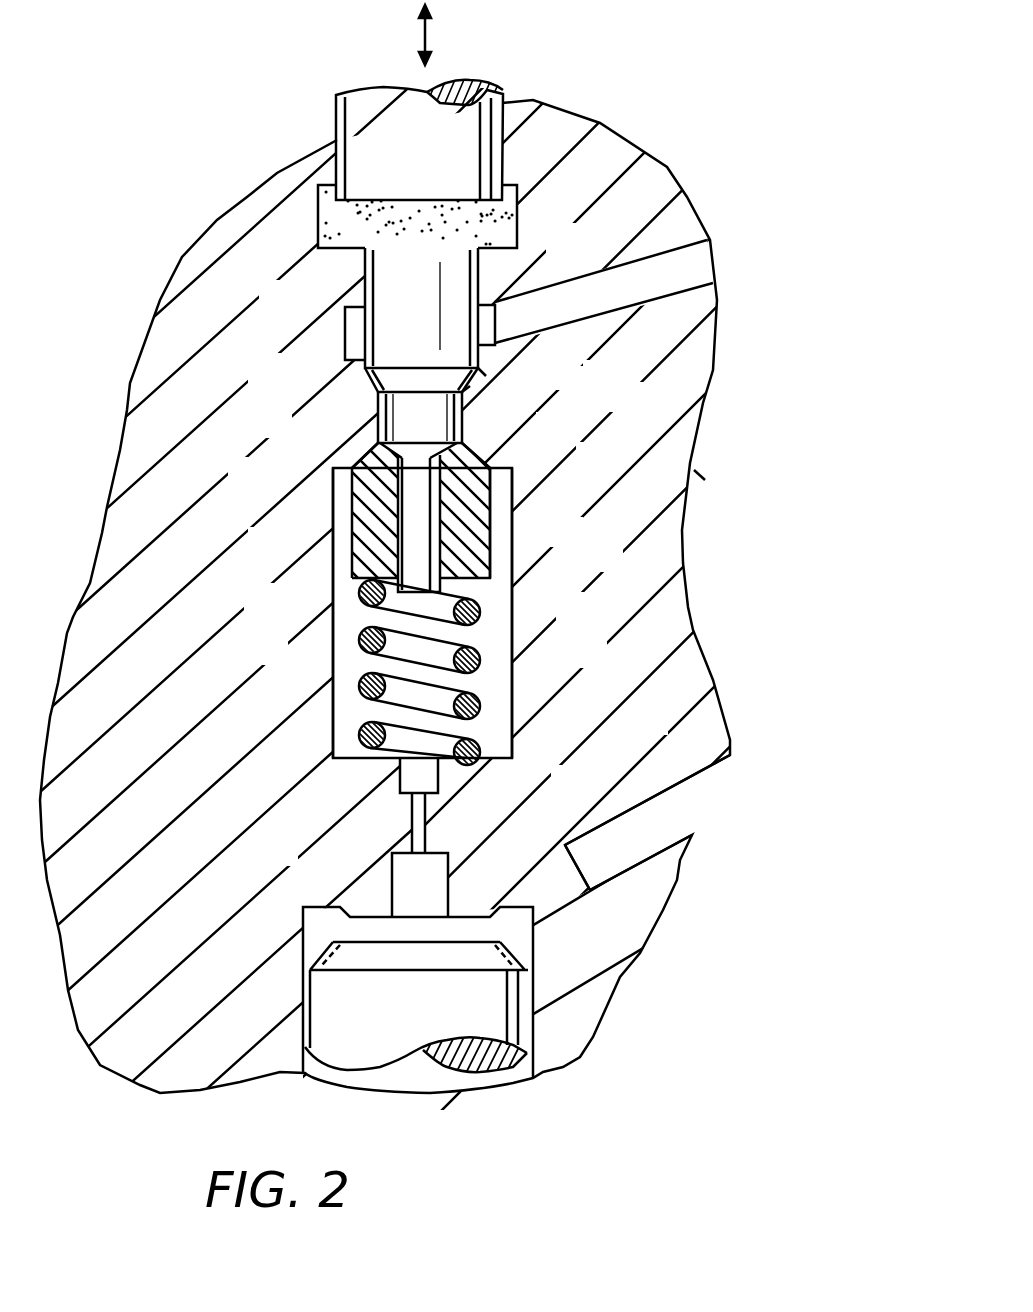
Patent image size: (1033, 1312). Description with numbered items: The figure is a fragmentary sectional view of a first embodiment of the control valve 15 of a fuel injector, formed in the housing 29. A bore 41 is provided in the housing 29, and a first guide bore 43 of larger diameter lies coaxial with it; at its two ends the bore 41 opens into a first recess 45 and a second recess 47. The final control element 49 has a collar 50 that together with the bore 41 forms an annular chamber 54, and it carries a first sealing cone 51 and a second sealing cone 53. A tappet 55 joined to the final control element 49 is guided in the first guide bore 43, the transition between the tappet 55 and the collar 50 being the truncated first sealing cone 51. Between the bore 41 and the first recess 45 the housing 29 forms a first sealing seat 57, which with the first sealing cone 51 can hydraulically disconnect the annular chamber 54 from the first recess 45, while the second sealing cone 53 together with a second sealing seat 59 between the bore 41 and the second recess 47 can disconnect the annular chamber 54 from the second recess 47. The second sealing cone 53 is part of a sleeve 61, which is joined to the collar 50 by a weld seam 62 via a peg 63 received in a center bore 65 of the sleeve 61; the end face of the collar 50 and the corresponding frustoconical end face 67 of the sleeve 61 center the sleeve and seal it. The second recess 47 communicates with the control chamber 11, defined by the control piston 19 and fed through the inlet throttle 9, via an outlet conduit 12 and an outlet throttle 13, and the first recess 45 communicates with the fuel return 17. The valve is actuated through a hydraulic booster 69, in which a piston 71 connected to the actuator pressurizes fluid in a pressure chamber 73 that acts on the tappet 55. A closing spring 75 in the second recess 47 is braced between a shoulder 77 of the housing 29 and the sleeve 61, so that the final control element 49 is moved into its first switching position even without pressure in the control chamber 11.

The inlet throttle 9 is at (563, 897).
The control chamber 11 is at (530, 932).
The outlet conduit 12 is at (397, 882).
The outlet throttle 13 is at (425, 822).
The control valve 15 is at (795, 409).
The fuel return 17 is at (690, 265).
The control piston 19 is at (530, 1013).
The housing 29 is at (646, 527).
The bore 41 is at (437, 355).
The first guide bore 43 is at (343, 288).
The first recess 45 is at (493, 363).
The second recess 47 is at (516, 656).
The final control element 49 is at (402, 426).
The collar 50 is at (465, 428).
The first sealing cone 51 is at (478, 388).
The second sealing cone 53 is at (487, 452).
The annular chamber 54 is at (457, 402).
The tappet 55 is at (447, 292).
The first sealing seat 57 is at (370, 375).
The second sealing seat 59 is at (355, 462).
The sleeve 61 is at (470, 530).
The weld seam 62 is at (507, 593).
The peg 63 is at (333, 597).
The center bore 65 is at (412, 503).
The end face 67 is at (478, 482).
The hydraulic booster 69 is at (397, 126).
The piston 71 is at (470, 128).
The pressure chamber 73 is at (583, 213).
The closing spring 75 is at (481, 658).
The shoulder 77 is at (505, 730).